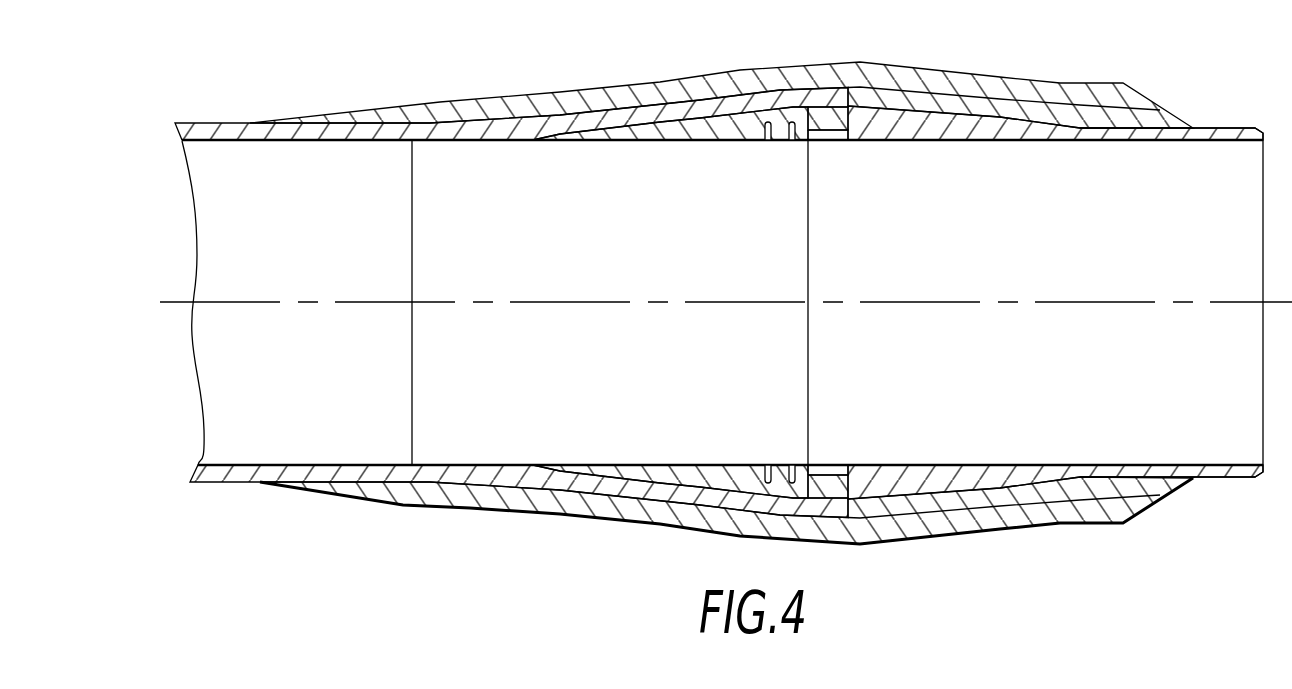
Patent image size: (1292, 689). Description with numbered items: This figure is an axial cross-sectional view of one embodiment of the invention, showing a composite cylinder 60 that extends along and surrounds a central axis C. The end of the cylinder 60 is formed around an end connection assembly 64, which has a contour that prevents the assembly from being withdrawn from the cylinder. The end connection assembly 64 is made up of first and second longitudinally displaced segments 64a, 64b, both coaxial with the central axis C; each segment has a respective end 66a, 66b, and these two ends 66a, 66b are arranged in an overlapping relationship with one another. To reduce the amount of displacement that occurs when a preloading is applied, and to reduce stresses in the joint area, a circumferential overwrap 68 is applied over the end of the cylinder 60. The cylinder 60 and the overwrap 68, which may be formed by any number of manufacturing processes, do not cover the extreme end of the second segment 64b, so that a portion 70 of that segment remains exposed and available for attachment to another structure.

The composite cylinder 60 is at (218, 122).
The end connection assembly 64 is at (898, 252).
The first segment 64a is at (732, 126).
The second segment 64b is at (920, 118).
The end of first segment 66a is at (835, 115).
The end of second segment 66b is at (833, 142).
The circumferential overwrap 68 is at (500, 100).
The portion 70 is at (1243, 128).
The central axis C is at (716, 306).